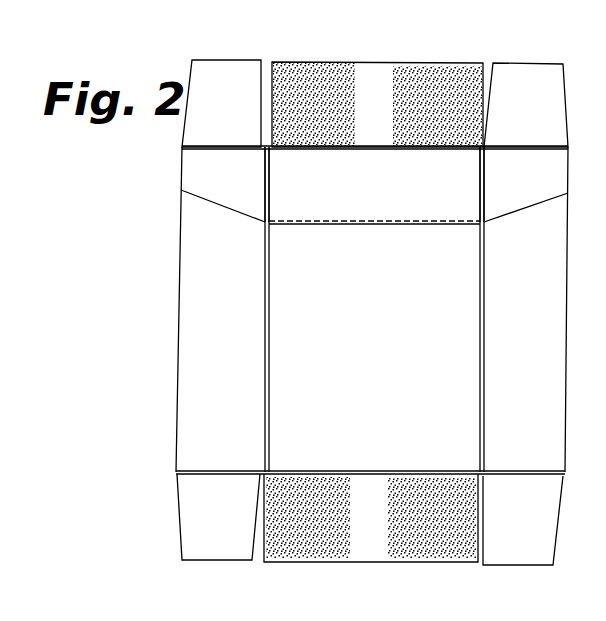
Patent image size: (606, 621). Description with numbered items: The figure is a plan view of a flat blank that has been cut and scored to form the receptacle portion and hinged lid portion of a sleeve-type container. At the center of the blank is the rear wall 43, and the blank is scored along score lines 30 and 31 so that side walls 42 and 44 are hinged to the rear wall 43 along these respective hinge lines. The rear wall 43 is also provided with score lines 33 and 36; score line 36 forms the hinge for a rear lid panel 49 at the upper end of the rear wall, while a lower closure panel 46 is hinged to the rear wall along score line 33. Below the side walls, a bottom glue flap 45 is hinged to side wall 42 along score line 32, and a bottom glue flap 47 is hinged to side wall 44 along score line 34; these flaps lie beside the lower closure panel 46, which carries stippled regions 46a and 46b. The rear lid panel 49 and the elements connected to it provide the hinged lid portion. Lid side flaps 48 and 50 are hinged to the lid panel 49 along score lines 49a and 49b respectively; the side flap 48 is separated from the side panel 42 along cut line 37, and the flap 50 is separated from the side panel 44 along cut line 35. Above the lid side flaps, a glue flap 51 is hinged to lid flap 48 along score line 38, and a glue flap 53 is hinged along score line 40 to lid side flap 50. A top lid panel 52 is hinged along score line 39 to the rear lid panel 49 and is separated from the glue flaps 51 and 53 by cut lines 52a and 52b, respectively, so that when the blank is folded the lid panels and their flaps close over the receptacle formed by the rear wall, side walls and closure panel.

The score line 30 is at (270, 303).
The score line 31 is at (480, 306).
The score line 32 is at (223, 471).
The score line 33 is at (362, 471).
The score line 34 is at (507, 474).
The cut line 35 is at (508, 215).
The score line 36 is at (385, 225).
The cut line 37 is at (232, 208).
The score line 38 is at (215, 146).
The score line 39 is at (357, 148).
The score line 40 is at (527, 147).
The side wall 42 is at (222, 374).
The rear wall 43 is at (375, 352).
The side wall 44 is at (529, 349).
The bottom glue flap 45 is at (224, 526).
The lower closure panel 46 is at (378, 525).
The adhesive area 46a is at (265, 533).
The adhesive area 46b is at (473, 525).
The bottom glue flap 47 is at (534, 520).
The lid side flap 48 is at (239, 187).
The rear lid panel 49 is at (407, 200).
The score line 49a is at (270, 192).
The score line 49b is at (483, 183).
The lid side flap 50 is at (531, 187).
The glue flap 51 is at (229, 102).
The top lid panel 52 is at (384, 109).
The cut line 52a is at (275, 83).
The cut line 52b is at (483, 90).
The glue flap 53 is at (537, 104).